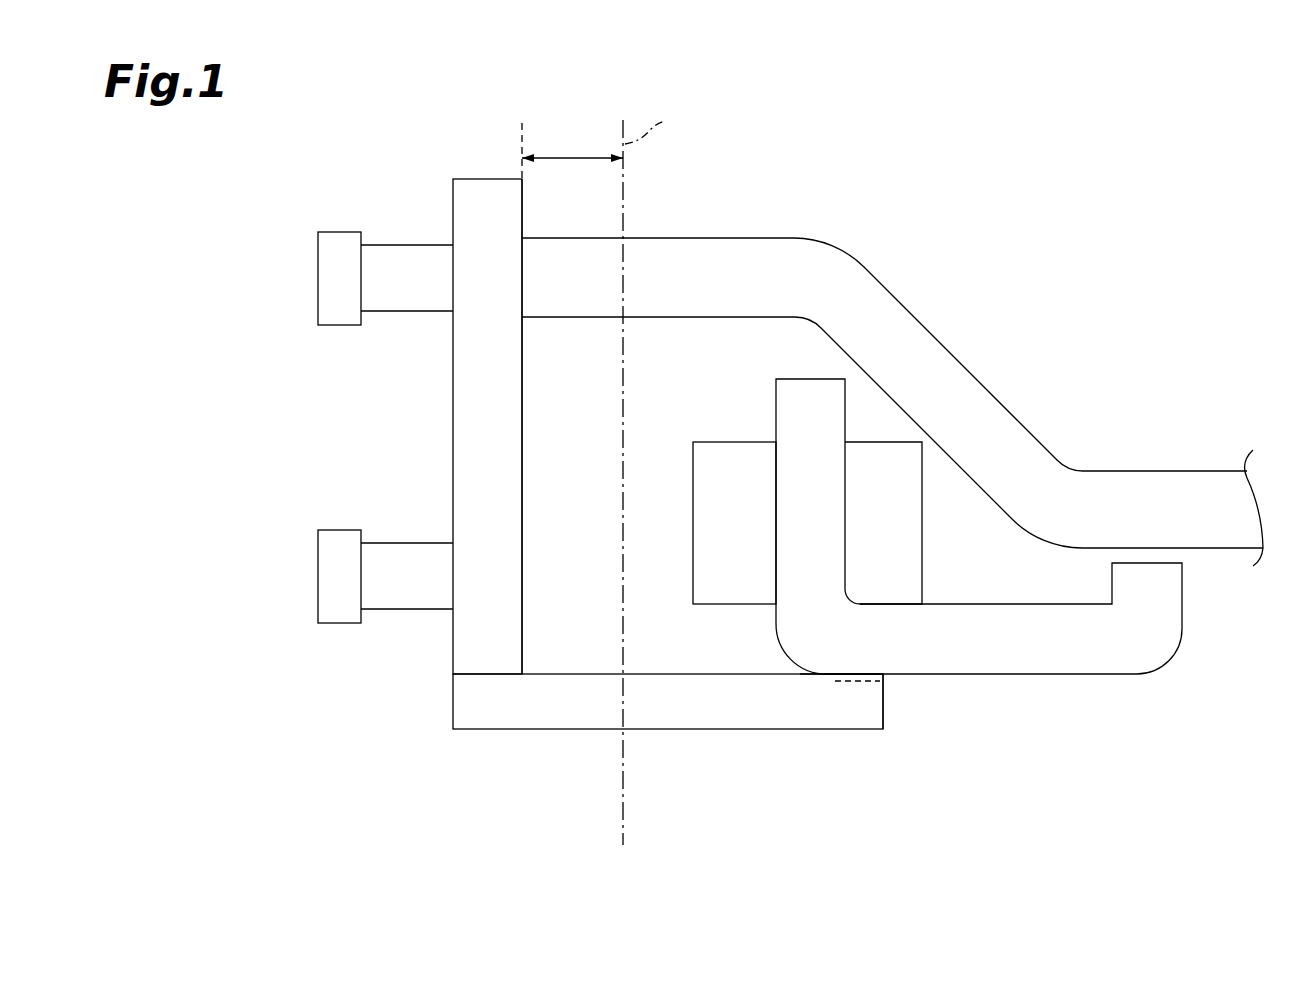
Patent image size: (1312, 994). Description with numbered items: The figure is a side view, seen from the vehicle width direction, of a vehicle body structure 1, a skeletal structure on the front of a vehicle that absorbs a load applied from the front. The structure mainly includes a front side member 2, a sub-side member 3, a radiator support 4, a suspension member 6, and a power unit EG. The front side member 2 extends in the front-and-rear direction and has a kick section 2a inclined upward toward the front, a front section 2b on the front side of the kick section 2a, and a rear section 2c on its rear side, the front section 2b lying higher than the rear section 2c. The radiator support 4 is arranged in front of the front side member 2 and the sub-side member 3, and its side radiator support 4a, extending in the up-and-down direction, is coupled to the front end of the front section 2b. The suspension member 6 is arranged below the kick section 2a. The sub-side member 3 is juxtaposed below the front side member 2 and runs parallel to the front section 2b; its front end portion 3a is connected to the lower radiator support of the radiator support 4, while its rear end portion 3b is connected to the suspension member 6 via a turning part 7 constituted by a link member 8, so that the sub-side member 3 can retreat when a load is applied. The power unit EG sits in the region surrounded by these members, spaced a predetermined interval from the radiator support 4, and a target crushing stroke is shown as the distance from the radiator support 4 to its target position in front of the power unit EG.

The vehicle body structure 1 is at (337, 170).
The front side member 2 is at (1084, 307).
The kick section 2a is at (850, 227).
The front section 2b is at (522, 216).
The rear section 2c is at (1245, 465).
The sub-side member 3 is at (714, 742).
The front end portion 3a is at (483, 710).
The rear end portion 3b is at (870, 712).
The radiator support 4 is at (447, 388).
The side radiator support 4a is at (510, 445).
The suspension member 6 is at (1024, 692).
The turning part 7 is at (823, 702).
The link member 8 is at (880, 681).
The power unit EG is at (728, 440).